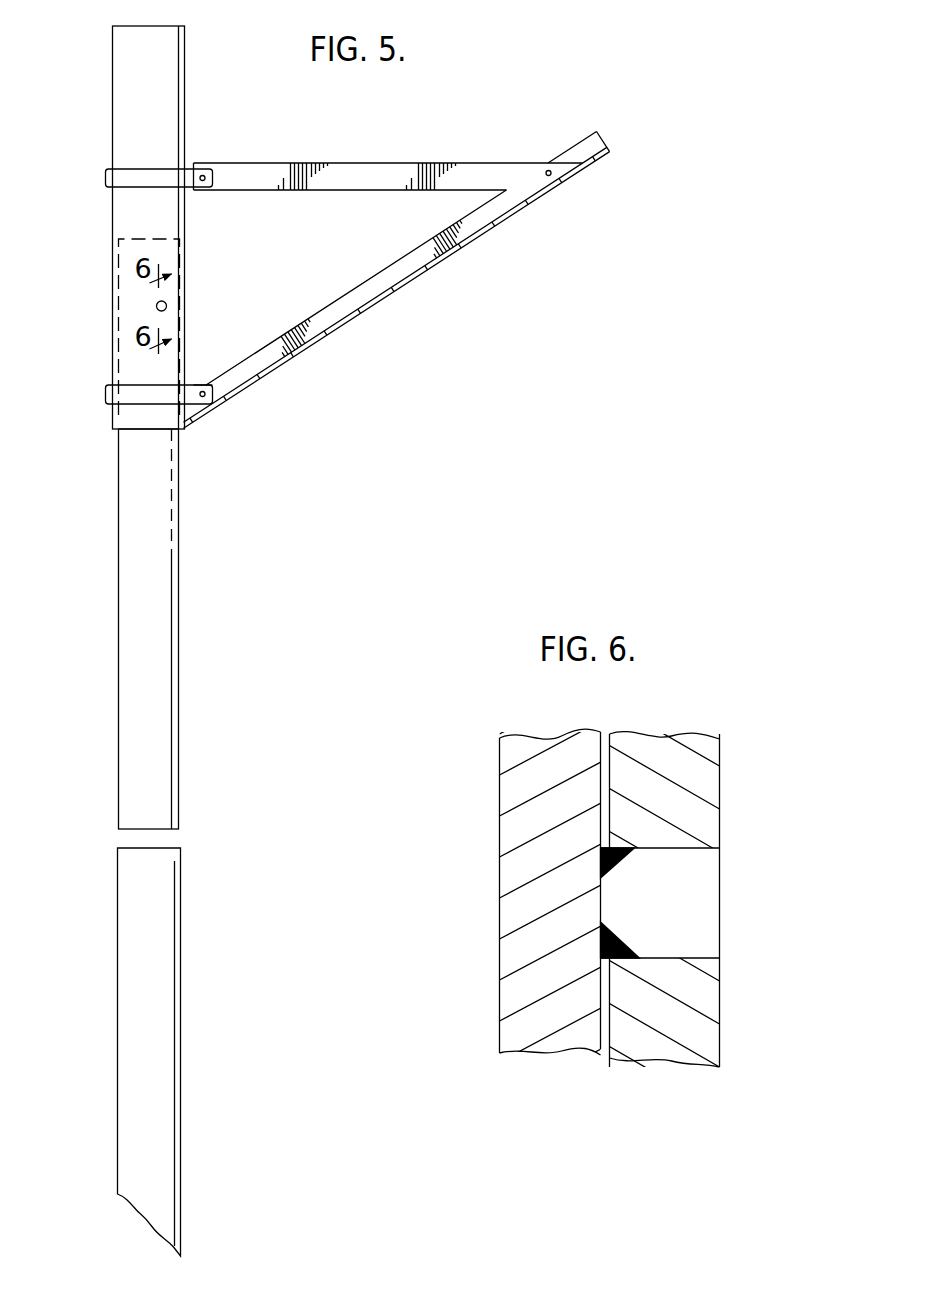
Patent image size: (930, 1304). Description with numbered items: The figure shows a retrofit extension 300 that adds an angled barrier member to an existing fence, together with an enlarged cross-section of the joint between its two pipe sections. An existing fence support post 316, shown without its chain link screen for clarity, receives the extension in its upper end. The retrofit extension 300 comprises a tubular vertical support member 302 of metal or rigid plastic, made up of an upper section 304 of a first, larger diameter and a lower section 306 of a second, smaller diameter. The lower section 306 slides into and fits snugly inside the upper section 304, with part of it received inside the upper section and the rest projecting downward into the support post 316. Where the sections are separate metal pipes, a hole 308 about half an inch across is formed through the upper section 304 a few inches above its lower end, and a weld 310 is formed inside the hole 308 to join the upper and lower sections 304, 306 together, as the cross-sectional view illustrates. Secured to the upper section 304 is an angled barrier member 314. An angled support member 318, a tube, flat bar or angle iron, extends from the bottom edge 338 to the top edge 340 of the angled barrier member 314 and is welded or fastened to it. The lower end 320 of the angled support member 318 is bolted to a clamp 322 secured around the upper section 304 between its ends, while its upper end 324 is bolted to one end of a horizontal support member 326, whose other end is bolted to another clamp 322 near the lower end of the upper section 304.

In FIG. 5, the retrofit extension 300 is at (109, 347).
In FIG. 5, the vertical support member 302 is at (115, 563).
In FIG. 5, the upper section 304 is at (111, 136).
In FIG. 6, the upper section 304 is at (718, 793).
In FIG. 5, the lower section 306 is at (176, 591).
In FIG. 6, the lower section 306 is at (499, 930).
In FIG. 5, the hole 308 is at (165, 301).
In FIG. 6, the hole 308 is at (716, 921).
In FIG. 6, the weld 310 is at (617, 872).
In FIG. 5, the angled barrier member 314 is at (390, 293).
In FIG. 5, the support post 316 is at (181, 1027).
In FIG. 5, the angled support member 318 is at (338, 298).
In FIG. 5, the lower end 320 is at (194, 383).
In FIG. 5, the clamp 322 is at (104, 178).
In FIG. 5, the upper end 324 is at (580, 141).
In FIG. 5, the horizontal support member 326 is at (362, 161).
In FIG. 5, the bottom edge 338 is at (184, 427).
In FIG. 5, the top edge 340 is at (611, 148).